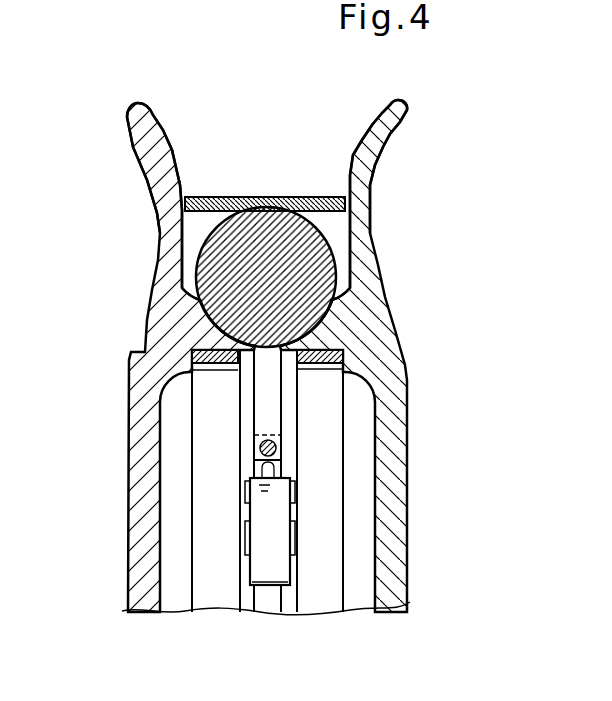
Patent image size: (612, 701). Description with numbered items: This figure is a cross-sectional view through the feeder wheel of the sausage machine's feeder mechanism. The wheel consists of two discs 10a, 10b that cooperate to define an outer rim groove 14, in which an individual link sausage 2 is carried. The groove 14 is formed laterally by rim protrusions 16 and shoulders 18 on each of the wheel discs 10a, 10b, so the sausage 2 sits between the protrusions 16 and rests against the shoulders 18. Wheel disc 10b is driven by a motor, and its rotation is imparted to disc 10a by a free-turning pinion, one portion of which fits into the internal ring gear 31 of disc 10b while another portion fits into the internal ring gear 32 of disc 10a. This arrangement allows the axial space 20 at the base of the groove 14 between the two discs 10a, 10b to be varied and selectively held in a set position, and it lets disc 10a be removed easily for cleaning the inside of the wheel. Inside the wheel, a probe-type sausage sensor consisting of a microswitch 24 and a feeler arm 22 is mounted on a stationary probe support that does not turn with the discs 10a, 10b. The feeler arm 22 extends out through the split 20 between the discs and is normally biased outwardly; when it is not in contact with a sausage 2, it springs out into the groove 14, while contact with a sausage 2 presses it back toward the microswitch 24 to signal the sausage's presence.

The link sausage 2 is at (322, 268).
The wheel disc 10a is at (392, 453).
The wheel disc 10b is at (142, 453).
The outer rim groove 14 is at (192, 245).
The rim protrusions 16 is at (165, 165).
The shoulders 18 is at (210, 340).
The space 20 is at (284, 360).
The feeler arm 22 is at (280, 438).
The microswitch 24 is at (263, 568).
The internal ring gear 31 is at (222, 358).
The internal ring gear 32 is at (340, 359).